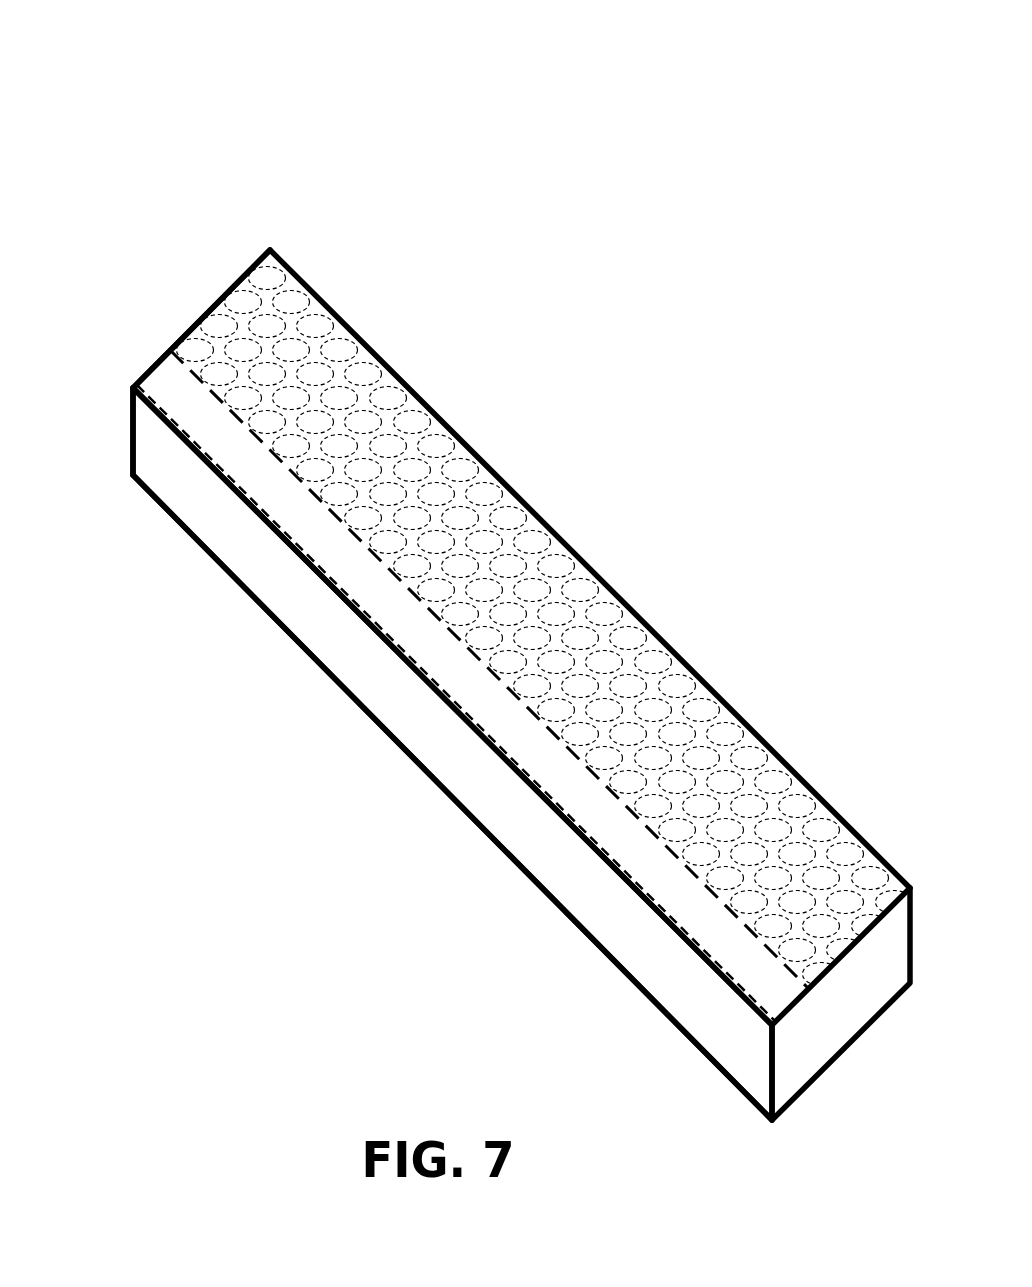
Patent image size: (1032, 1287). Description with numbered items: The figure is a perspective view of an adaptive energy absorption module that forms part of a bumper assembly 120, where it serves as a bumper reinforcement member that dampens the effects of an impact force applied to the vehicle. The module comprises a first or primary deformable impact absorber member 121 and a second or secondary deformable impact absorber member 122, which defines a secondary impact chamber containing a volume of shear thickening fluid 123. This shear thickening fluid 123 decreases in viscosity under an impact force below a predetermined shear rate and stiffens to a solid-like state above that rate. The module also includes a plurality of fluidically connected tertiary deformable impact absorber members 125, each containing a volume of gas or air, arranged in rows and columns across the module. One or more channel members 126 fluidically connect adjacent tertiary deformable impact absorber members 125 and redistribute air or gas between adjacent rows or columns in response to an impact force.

The bumper assembly 120 is at (862, 98).
The primary deformable impact absorber member 121 is at (132, 443).
The secondary deformable impact absorber member 122 is at (222, 478).
The shear thickening fluid 123 is at (395, 603).
The tertiary deformable impact absorber member 125 is at (797, 950).
The channel member 126 is at (230, 318).